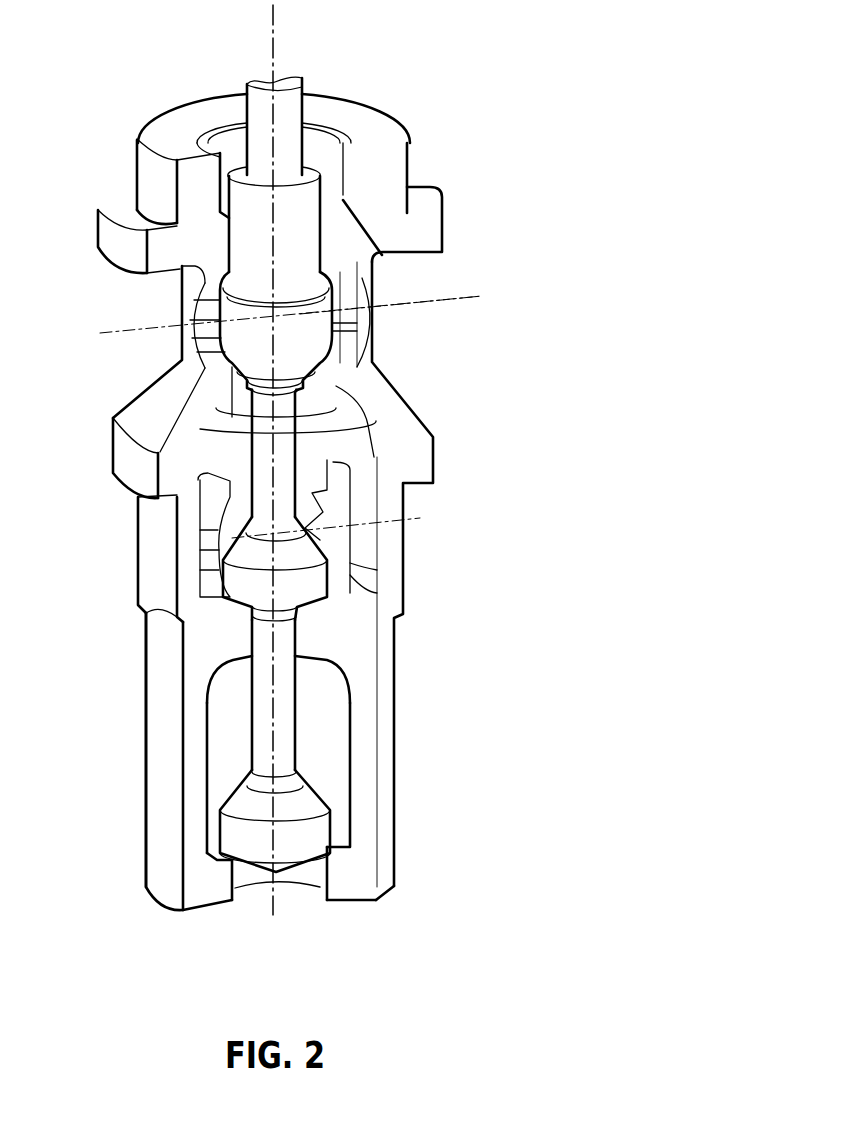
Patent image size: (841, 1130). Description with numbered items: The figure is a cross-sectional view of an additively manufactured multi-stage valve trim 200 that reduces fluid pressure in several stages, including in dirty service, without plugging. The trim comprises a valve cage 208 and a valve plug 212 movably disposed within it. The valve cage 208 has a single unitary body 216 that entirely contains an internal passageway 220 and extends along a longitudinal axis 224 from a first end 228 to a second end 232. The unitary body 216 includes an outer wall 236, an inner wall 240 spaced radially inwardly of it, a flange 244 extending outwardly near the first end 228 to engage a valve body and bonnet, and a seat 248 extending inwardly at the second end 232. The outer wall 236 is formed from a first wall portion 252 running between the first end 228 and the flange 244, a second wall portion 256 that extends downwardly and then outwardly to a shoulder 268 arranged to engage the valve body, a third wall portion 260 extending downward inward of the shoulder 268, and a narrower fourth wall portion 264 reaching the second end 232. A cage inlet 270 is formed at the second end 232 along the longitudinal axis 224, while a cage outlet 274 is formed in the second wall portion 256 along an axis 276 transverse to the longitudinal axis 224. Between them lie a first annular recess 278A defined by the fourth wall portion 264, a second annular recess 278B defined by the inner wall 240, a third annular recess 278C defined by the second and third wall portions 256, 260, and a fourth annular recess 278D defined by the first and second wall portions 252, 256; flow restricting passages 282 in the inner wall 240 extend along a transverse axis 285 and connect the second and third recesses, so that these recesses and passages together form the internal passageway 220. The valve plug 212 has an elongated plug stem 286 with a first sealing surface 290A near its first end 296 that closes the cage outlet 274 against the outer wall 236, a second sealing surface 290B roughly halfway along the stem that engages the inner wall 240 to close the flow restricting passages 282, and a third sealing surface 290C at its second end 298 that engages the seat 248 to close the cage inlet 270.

The multi-stage valve trim 200 is at (445, 132).
The valve cage 208 is at (397, 706).
The valve plug 212 is at (300, 748).
The unitary body 216 is at (165, 767).
The internal passageway 220 is at (207, 705).
The longitudinal axis 224 is at (270, 17).
The first end 228 is at (387, 117).
The second end 232 is at (352, 905).
The outer wall 236 is at (104, 750).
The inner wall 240 is at (230, 495).
The flange 244 is at (115, 237).
The seat 248 is at (220, 860).
The first wall portion 252 is at (147, 170).
The second wall portion 256 is at (153, 403).
The third wall portion 260 is at (138, 605).
The fourth wall portion 264 is at (122, 766).
The shoulder 268 is at (138, 460).
The cage inlet 270 is at (320, 887).
The cage outlet 274 is at (105, 332).
The axis 276 is at (482, 296).
The first annular recess 278A is at (232, 757).
The second annular recess 278B is at (313, 632).
The third annular recess 278C is at (367, 490).
The fourth annular recess 278D is at (333, 321).
The flow restricting passages 282 is at (200, 545).
The transverse axis 285 is at (420, 518).
The elongated plug stem 286 is at (303, 196).
The first sealing surface 290A is at (307, 350).
The second sealing surface 290B is at (313, 577).
The third sealing surface 290C is at (310, 837).
The first end 296 is at (310, 170).
The second end 298 is at (330, 868).